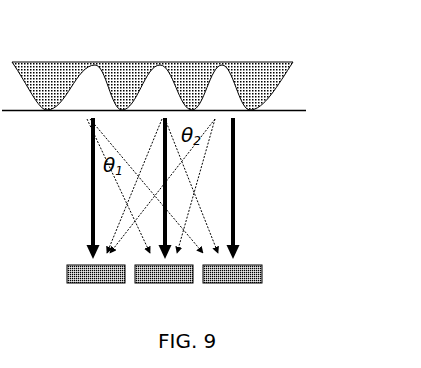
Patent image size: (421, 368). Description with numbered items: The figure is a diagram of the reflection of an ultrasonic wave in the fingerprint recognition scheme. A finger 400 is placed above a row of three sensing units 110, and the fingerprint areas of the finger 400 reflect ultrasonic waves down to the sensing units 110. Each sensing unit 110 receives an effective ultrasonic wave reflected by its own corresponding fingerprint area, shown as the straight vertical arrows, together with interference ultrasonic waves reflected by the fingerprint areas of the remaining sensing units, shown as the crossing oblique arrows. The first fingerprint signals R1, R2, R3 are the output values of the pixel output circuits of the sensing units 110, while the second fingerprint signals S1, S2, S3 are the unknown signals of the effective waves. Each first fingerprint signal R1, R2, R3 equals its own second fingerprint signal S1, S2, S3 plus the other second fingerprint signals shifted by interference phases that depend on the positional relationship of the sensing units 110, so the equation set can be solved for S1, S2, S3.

The finger 400 is at (265, 79).
The sensing unit 110 is at (220, 264).
The second fingerprint signal S1 is at (86, 171).
The second fingerprint signal S2 is at (157, 171).
The second fingerprint signal S3 is at (225, 171).
The first fingerprint signal R1 is at (96, 288).
The first fingerprint signal R2 is at (164, 288).
The first fingerprint signal R3 is at (232, 288).